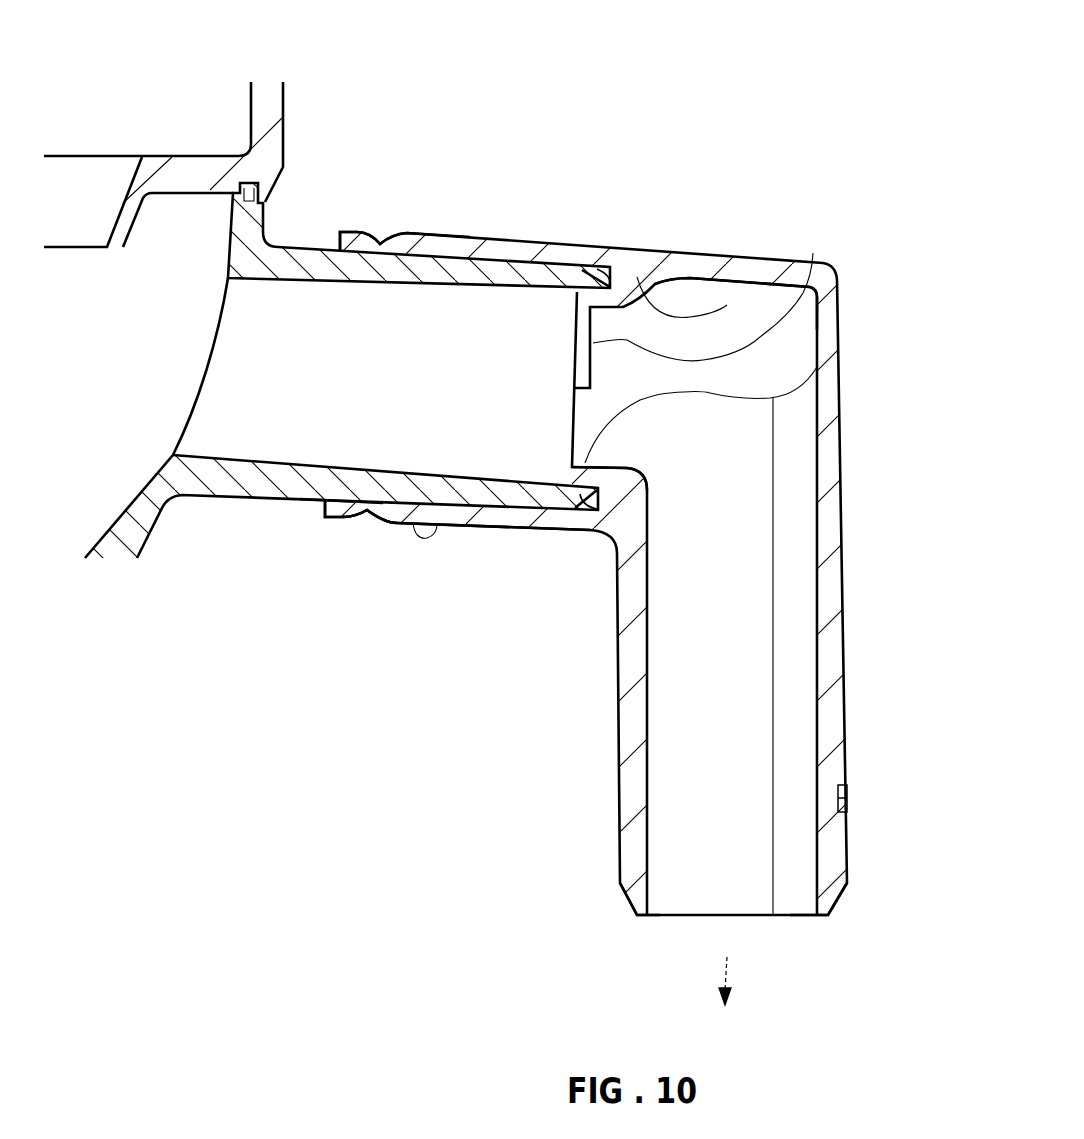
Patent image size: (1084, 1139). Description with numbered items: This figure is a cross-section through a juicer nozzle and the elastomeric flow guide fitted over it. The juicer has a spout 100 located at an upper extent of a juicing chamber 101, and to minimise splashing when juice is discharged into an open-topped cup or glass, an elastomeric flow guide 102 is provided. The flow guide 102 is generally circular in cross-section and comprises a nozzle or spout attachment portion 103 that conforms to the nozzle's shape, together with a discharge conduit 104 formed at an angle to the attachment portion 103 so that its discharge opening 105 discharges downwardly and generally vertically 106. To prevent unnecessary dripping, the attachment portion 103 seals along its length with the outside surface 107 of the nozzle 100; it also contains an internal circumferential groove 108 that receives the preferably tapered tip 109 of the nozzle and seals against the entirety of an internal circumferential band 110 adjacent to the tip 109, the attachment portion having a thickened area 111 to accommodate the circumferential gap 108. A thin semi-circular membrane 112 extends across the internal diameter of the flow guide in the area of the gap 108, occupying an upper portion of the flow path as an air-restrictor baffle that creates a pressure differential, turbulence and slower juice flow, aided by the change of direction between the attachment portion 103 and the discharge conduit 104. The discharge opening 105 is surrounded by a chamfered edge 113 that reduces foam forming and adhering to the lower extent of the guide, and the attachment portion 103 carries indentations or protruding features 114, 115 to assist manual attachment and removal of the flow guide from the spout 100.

The spout 100 is at (320, 250).
The juicing chamber 101 is at (218, 232).
The elastomeric flow guide 102 is at (698, 305).
The nozzle or spout attachment portion 103 is at (487, 515).
The discharge conduit 104 is at (797, 722).
The discharge opening 105 is at (797, 920).
The vertical discharge direction 106 is at (730, 968).
The outside surface of the nozzle 107 is at (468, 248).
The internal circumferential groove 108 is at (595, 530).
The tapered tip 109 is at (607, 262).
The internal circumferential band 110 is at (817, 367).
The thickened area 111 is at (740, 317).
The semi-circular membrane 112 is at (800, 315).
The chamfered edge 113 is at (630, 898).
The protruding feature 114 is at (383, 500).
The protruding feature 115 is at (370, 517).